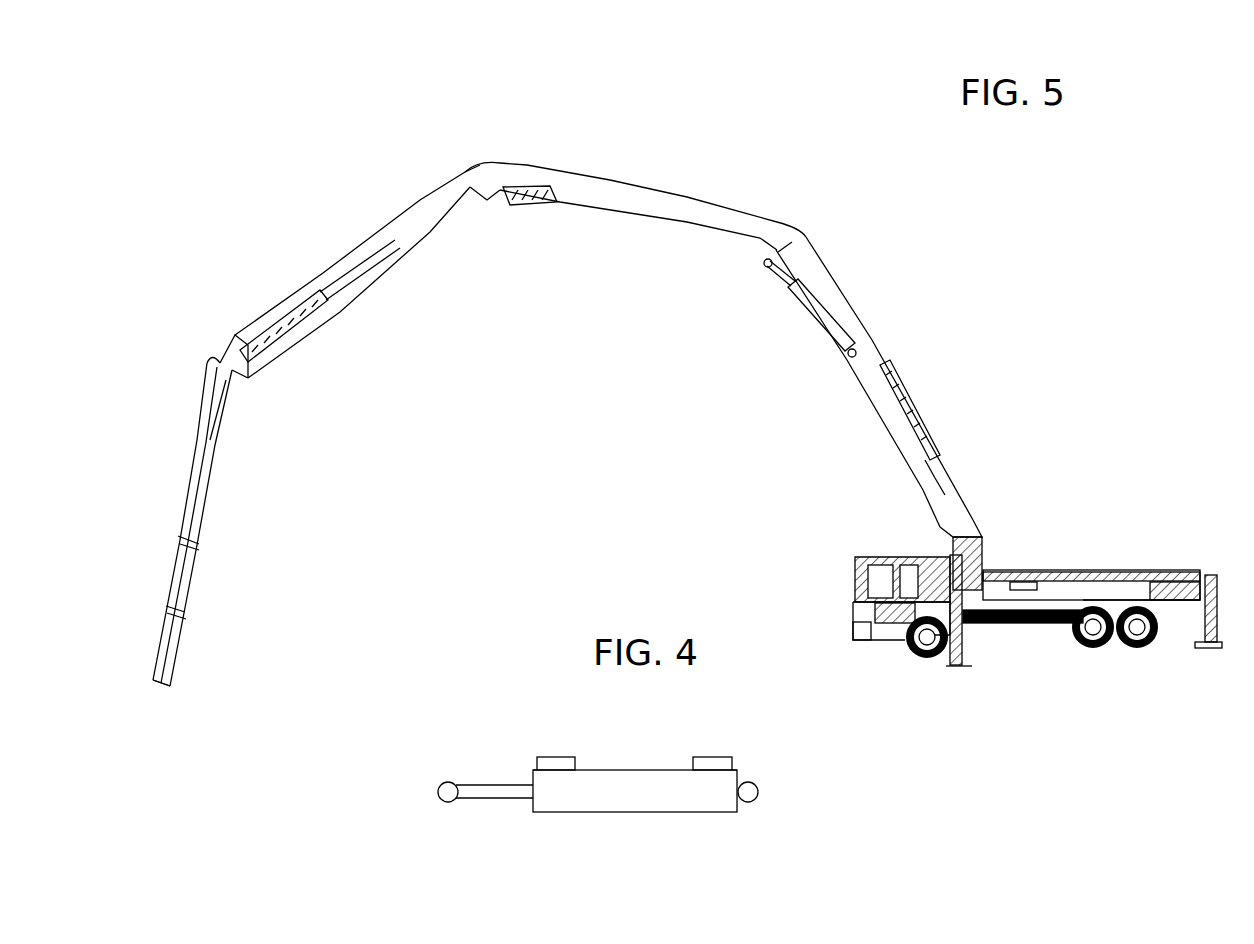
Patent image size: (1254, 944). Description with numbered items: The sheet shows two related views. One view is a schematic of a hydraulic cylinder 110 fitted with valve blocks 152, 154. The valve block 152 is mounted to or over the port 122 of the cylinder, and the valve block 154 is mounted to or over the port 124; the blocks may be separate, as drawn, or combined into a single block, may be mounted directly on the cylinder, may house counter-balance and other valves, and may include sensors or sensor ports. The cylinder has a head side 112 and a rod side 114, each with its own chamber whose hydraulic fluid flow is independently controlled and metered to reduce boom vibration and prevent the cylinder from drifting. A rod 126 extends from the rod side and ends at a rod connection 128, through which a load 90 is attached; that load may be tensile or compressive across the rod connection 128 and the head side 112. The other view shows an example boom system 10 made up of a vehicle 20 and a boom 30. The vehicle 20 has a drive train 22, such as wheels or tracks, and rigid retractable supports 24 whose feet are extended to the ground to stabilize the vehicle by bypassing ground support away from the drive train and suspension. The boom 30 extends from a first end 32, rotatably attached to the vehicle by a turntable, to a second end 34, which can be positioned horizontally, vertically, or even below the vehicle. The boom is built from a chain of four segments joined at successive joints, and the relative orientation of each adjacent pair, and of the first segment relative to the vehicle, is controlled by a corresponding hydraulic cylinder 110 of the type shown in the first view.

In FIG. 5, the boom system 10 is at (1037, 235).
In FIG. 5, the vehicle 20 is at (1047, 565).
In FIG. 5, the drive train 22 is at (1075, 647).
In FIG. 5, the rigid retractable supports 24 is at (1210, 645).
In FIG. 5, the boom 30 is at (690, 195).
In FIG. 5, the first end 32 is at (975, 563).
In FIG. 5, the second end 34 is at (152, 682).
In FIG. 5, the load 90 is at (338, 105).
In FIG. 4, the hydraulic cylinder 110 is at (644, 821).
In FIG. 5, the head side 112 is at (857, 350).
In FIG. 4, the head side 112 is at (755, 785).
In FIG. 5, the rod side 114 is at (795, 297).
In FIG. 4, the rod side 114 is at (530, 806).
In FIG. 4, the port 122 is at (733, 770).
In FIG. 4, the port 124 is at (536, 768).
In FIG. 5, the rod 126 is at (778, 284).
In FIG. 4, the rod 126 is at (490, 797).
In FIG. 5, the rod connection 128 is at (765, 263).
In FIG. 4, the valve block 152 is at (703, 757).
In FIG. 4, the valve block 154 is at (568, 757).